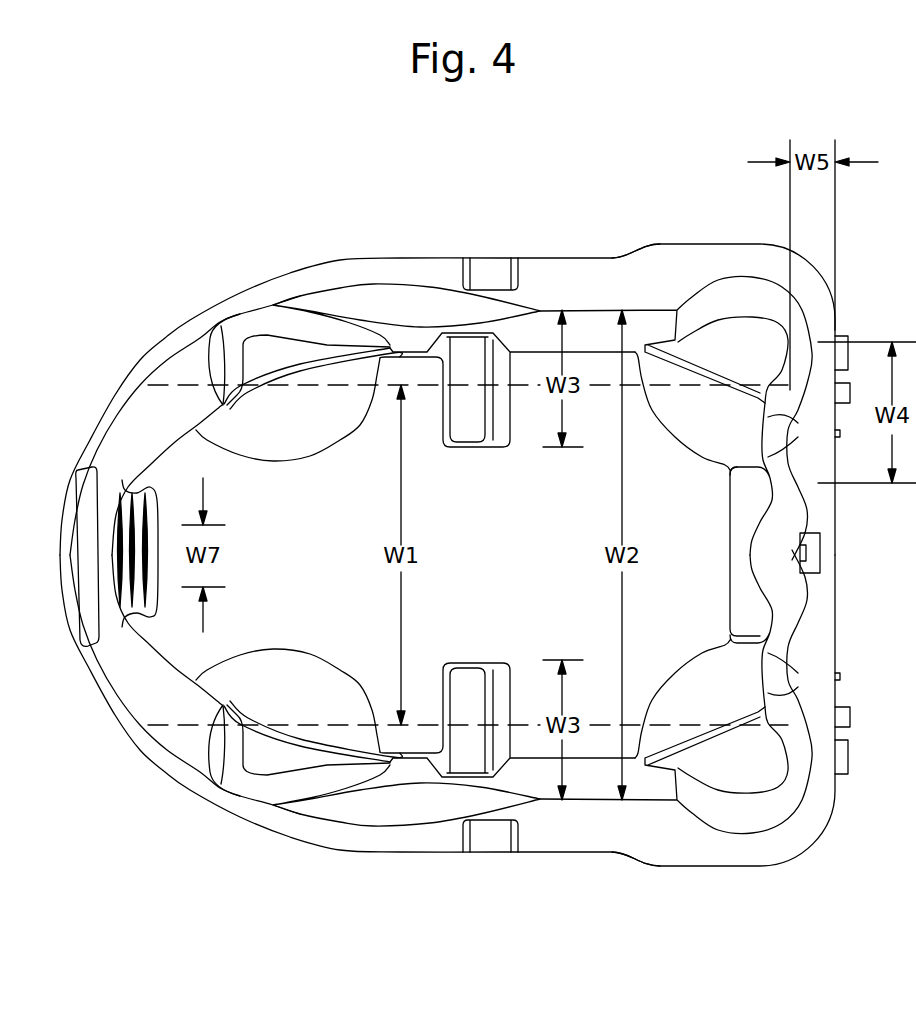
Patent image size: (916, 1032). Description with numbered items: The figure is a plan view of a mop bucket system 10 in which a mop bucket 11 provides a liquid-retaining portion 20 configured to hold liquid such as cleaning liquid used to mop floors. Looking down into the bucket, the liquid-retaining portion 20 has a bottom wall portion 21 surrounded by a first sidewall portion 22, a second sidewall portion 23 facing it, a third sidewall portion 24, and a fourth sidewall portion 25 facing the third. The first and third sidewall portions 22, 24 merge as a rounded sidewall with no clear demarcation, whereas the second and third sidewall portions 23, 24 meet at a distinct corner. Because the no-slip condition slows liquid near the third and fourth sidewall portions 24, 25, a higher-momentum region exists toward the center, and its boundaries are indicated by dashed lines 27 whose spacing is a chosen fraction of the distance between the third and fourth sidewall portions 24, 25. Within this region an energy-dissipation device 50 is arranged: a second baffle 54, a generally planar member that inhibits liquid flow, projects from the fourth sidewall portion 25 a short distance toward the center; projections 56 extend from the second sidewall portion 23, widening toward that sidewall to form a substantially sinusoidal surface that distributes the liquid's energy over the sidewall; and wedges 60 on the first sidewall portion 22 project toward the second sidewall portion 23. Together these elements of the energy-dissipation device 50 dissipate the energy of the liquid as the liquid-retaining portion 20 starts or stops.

The mop bucket system 10 is at (595, 176).
The mop bucket 11 is at (632, 258).
The liquid-retaining portion 20 is at (660, 250).
The bottom wall portion 21 is at (314, 569).
The first sidewall portion 22 is at (80, 466).
The second sidewall portion 23 is at (823, 532).
The third sidewall portion 24 is at (413, 258).
The fourth sidewall portion 25 is at (446, 852).
The dashed lines 27 is at (313, 385).
The energy-dissipation device 50 is at (143, 470).
The second baffle 54 is at (474, 448).
The projections 56 is at (726, 466).
The wedges 60 is at (118, 602).